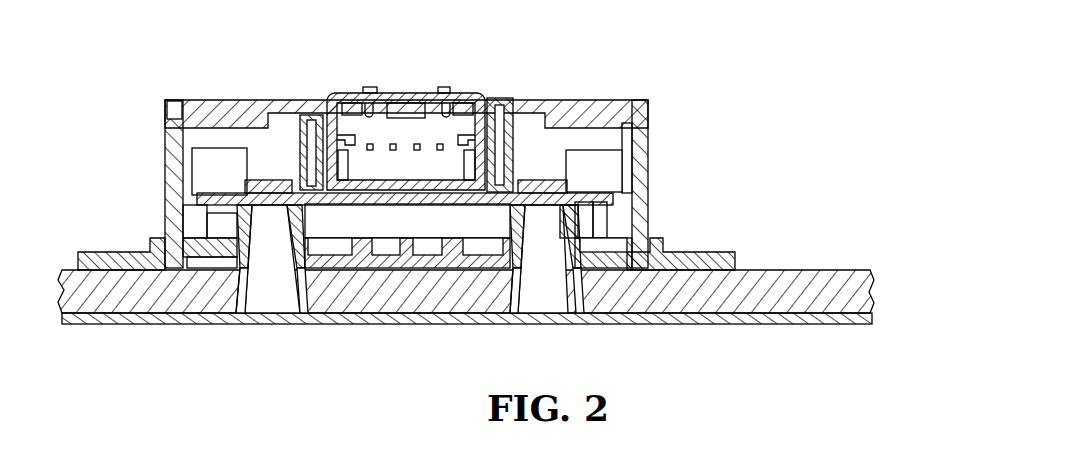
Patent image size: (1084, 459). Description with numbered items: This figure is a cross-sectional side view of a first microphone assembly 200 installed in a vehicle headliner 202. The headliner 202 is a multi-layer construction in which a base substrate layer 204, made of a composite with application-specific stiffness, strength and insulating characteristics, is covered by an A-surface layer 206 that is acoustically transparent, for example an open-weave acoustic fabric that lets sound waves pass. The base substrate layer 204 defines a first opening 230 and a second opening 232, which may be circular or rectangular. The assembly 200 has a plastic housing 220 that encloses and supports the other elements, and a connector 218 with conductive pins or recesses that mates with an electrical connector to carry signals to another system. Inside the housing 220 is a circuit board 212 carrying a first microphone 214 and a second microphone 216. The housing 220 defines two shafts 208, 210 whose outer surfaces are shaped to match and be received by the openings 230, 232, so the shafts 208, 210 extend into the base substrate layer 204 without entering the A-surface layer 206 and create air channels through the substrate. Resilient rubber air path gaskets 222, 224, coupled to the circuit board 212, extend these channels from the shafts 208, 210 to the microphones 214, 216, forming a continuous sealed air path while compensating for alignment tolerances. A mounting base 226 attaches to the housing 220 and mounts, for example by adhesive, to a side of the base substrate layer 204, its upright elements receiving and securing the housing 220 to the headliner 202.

The first microphone assembly 200 is at (662, 46).
The vehicle headliner 202 is at (511, 293).
The base substrate layer 204 is at (798, 268).
The A-surface layer 206 is at (798, 325).
The shaft 208 is at (272, 313).
The shaft 210 is at (551, 313).
The circuit board 212 is at (630, 200).
The first microphone 214 is at (543, 179).
The second microphone 216 is at (267, 178).
The connector 218 is at (415, 93).
The housing 220 is at (172, 198).
The air path gasket 222 is at (580, 228).
The air path gasket 224 is at (228, 212).
The mounting base 226 is at (97, 250).
The first opening 230 is at (228, 313).
The second opening 232 is at (502, 313).